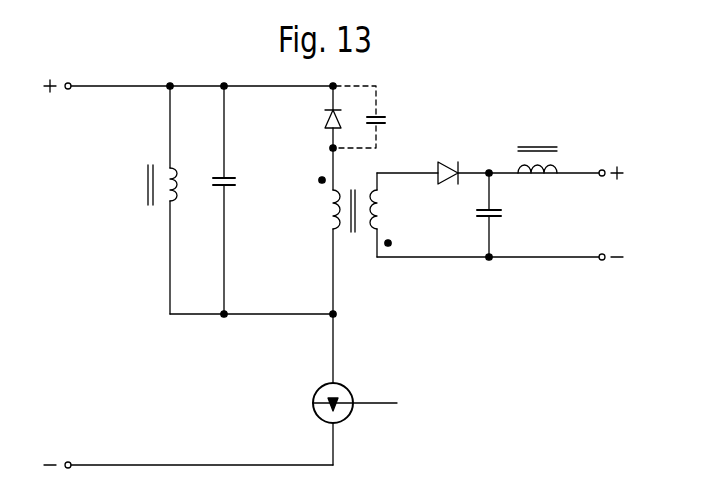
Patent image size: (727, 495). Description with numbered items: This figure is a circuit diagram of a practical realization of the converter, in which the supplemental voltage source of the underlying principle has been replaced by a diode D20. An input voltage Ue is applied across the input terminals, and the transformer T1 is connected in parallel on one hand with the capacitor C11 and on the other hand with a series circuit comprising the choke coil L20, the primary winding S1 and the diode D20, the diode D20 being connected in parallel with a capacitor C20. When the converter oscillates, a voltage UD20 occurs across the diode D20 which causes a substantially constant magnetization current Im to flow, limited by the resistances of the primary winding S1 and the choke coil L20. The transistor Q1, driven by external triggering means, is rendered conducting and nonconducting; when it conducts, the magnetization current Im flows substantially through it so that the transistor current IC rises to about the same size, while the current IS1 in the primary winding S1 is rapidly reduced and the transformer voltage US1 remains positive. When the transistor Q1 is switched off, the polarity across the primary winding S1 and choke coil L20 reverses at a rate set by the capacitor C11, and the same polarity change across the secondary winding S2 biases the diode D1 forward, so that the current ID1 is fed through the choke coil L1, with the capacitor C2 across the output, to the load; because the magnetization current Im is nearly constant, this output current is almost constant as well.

The choke coil L20 is at (155, 200).
The capacitor C11 is at (240, 200).
The diode D20 is at (352, 118).
The capacitor C20 is at (378, 117).
The transformer T1 is at (353, 200).
The primary winding S1 is at (323, 231).
The secondary winding S2 is at (391, 215).
The diode D1 is at (451, 161).
The choke coil L1 is at (537, 147).
The capacitor C2 is at (499, 215).
The transistor Q1 is at (355, 389).
The input voltage Ue is at (92, 455).
The voltage across diode D20 UD20 is at (277, 97).
The transformer voltage US1 is at (278, 303).
The magnetization current Im is at (196, 330).
The primary winding current IS1 is at (348, 284).
The transistor current IC is at (345, 352).
The current through diode D1 ID1 is at (409, 187).